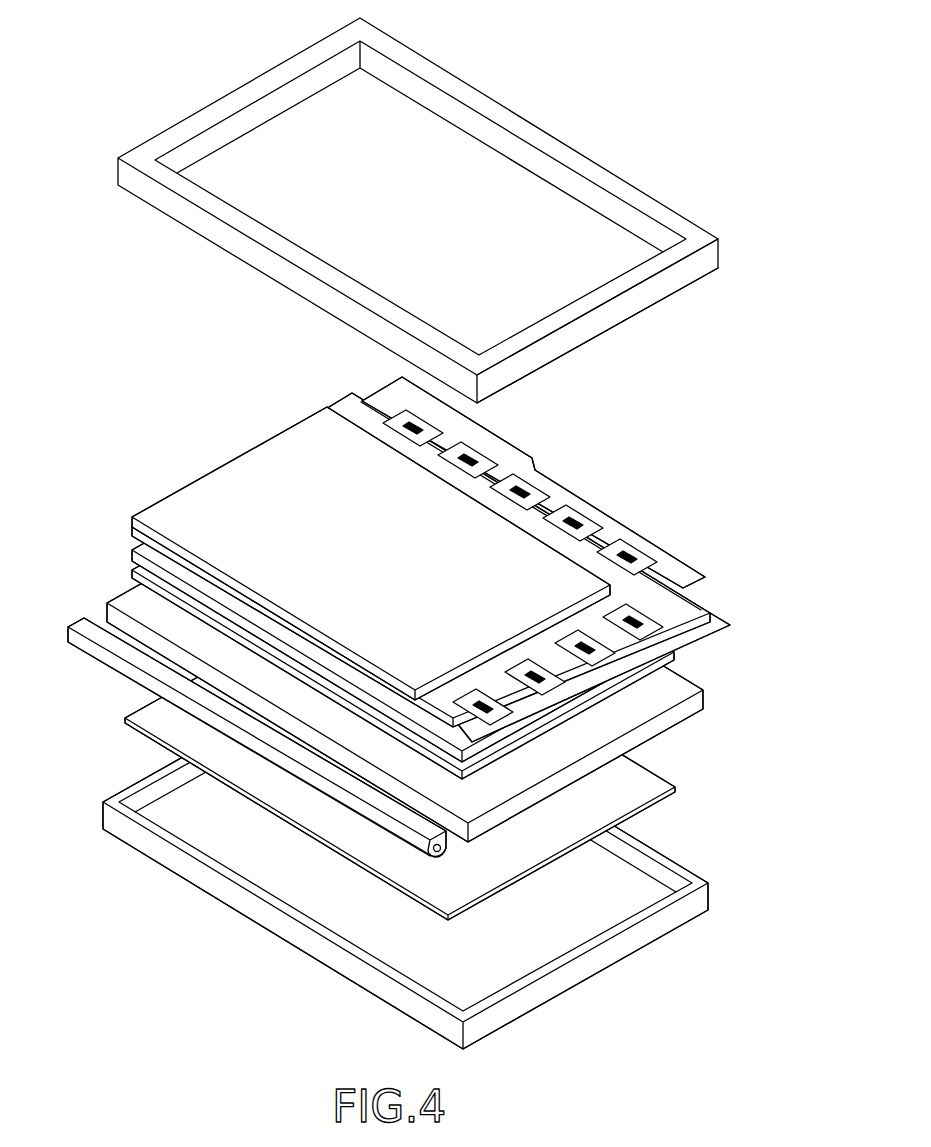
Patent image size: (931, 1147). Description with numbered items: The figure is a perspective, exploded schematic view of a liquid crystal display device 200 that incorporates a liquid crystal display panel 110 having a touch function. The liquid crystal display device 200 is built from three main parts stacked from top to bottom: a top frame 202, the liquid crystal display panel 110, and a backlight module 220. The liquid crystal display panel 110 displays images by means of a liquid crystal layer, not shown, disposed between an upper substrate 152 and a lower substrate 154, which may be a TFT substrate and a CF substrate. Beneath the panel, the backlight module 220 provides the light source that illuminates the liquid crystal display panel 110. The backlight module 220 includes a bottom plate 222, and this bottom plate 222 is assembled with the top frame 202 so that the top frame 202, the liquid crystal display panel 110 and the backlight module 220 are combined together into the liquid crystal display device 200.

The liquid crystal display panel 110 is at (465, 559).
The upper substrate 152 is at (653, 595).
The lower substrate 154 is at (547, 560).
The liquid crystal display device 200 is at (215, 78).
The top frame 202 is at (680, 275).
The backlight module 220 is at (412, 739).
The bottom plate 222 is at (117, 820).